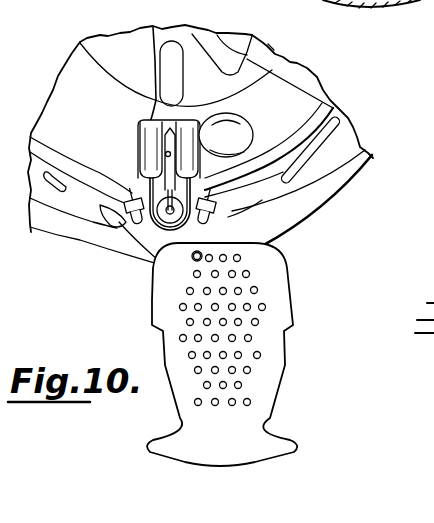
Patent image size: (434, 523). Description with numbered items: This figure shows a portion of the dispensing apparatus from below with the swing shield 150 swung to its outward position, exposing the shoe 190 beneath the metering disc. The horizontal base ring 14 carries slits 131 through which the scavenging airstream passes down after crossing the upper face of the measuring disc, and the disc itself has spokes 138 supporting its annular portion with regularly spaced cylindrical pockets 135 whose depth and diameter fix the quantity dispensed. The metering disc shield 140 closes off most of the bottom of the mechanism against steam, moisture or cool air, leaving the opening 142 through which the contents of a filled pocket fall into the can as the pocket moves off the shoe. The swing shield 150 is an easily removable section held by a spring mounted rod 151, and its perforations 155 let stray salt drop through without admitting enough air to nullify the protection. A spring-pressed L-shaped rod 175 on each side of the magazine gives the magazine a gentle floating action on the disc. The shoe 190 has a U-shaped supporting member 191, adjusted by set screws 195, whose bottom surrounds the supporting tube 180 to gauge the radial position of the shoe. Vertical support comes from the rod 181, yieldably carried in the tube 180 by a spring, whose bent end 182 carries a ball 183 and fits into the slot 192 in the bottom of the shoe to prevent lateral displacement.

The horizontal base ring 14 is at (343, 200).
The slits 131 is at (350, 133).
The cylindrical openings or pockets 135 is at (250, 130).
The spokes 138 is at (185, 41).
The metering disc shield 140 is at (141, 15).
The opening 142 is at (299, 92).
The swing shield 150 is at (288, 353).
The spring mounted rod 151 is at (194, 258).
The perforations 155 is at (262, 290).
The L-shaped rod 175 is at (103, 209).
The supporting tube 180 is at (150, 240).
The rod 181 is at (150, 230).
The bent end 182 is at (186, 182).
The ball 183 is at (168, 156).
The shoe 190 is at (200, 120).
The U-shaped supporting member 191 is at (214, 234).
The slot 192 is at (183, 131).
The set screws 195 is at (254, 153).